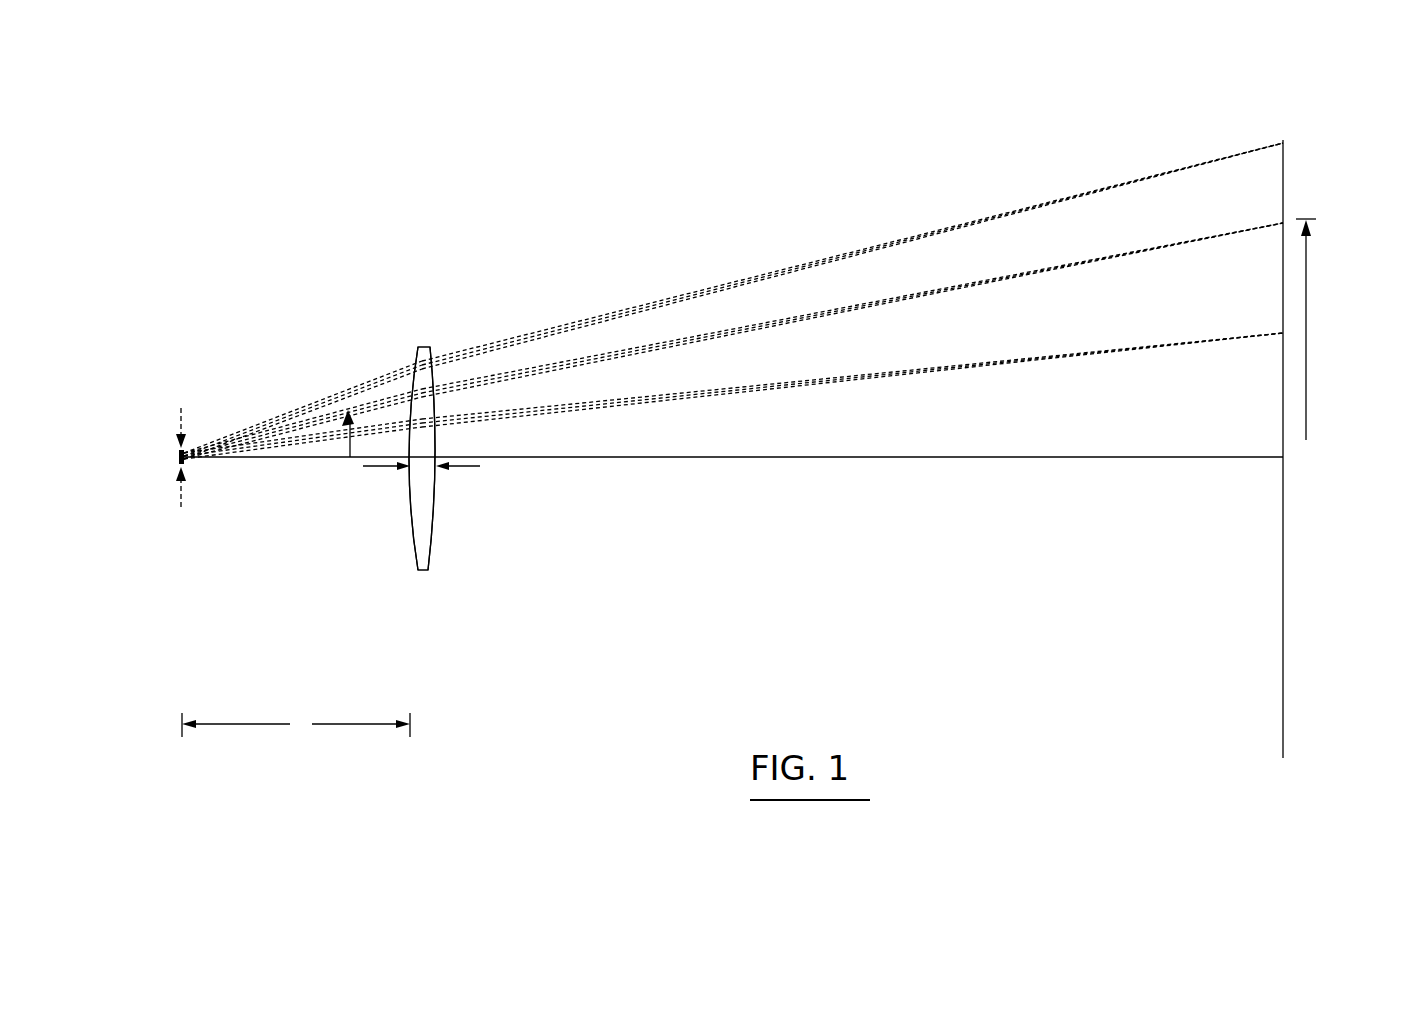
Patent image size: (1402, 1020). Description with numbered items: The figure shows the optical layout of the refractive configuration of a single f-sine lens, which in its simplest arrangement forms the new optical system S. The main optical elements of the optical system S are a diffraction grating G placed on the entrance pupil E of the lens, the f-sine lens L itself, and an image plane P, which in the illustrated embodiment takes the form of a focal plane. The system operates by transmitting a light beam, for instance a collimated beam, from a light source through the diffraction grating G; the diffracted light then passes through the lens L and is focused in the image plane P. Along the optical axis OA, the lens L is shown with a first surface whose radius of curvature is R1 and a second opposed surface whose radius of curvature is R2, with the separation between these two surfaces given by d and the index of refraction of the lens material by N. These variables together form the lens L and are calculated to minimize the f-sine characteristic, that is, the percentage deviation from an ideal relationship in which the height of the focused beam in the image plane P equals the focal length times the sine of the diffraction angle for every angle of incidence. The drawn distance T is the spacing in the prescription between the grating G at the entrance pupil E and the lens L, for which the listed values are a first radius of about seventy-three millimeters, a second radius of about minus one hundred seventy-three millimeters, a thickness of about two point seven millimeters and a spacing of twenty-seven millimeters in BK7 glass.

The optical system S is at (707, 222).
The image plane P is at (1290, 163).
The f sin(θ) lens L is at (440, 340).
The entrance pupil E is at (165, 420).
The diffraction grating G is at (165, 455).
The separation between lens surfaces d is at (423, 458).
The index of refraction N is at (422, 535).
The radius of curvature of first surface R1 is at (412, 540).
The radius of curvature of second surface R2 is at (435, 490).
The optical axis OA is at (1000, 457).
The distance from grating to lens T is at (296, 724).